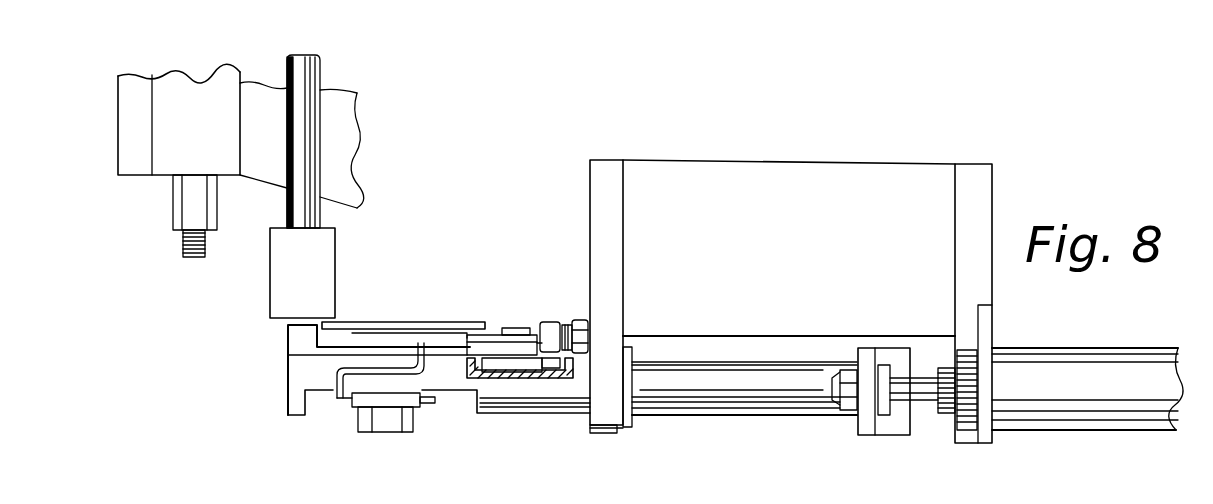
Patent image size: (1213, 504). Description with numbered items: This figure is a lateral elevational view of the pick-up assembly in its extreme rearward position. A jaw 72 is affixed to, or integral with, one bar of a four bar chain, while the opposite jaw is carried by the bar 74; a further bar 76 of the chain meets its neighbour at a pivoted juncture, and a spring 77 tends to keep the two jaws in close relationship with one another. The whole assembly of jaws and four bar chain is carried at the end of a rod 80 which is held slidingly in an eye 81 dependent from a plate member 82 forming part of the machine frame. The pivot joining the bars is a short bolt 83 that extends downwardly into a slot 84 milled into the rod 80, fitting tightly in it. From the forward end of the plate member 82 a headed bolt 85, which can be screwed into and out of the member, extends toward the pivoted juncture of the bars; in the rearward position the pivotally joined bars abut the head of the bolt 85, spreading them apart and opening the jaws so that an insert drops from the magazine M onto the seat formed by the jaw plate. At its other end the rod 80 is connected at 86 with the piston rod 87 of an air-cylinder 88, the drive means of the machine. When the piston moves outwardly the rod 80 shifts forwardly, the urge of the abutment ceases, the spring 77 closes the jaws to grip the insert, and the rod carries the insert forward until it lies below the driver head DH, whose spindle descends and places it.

The driver head DH is at (183, 207).
The magazine M is at (300, 207).
The jaw 72 is at (296, 338).
The bar 74 is at (370, 345).
The bar 76 is at (492, 355).
The spring 77 is at (331, 385).
The rod 80 is at (693, 398).
The eye 81 is at (630, 428).
The plate member 82 is at (800, 254).
The bolt 83 is at (520, 336).
The slot 84 is at (553, 363).
The headed bolt 85 is at (565, 322).
The connection 86 is at (870, 385).
The piston rod 87 is at (928, 400).
The air-cylinder 88 is at (1068, 370).